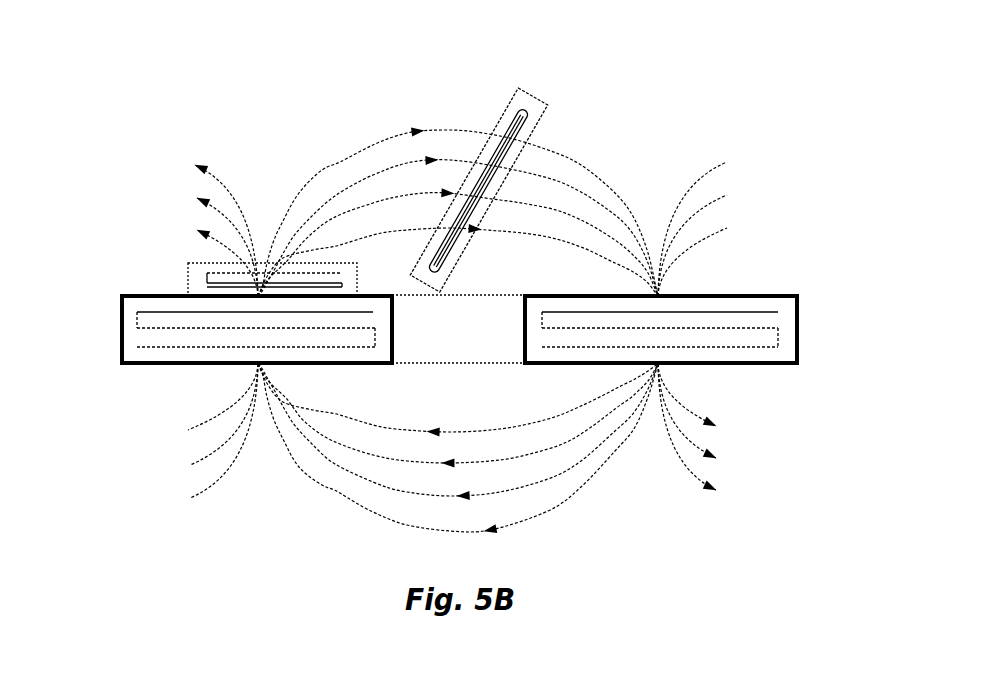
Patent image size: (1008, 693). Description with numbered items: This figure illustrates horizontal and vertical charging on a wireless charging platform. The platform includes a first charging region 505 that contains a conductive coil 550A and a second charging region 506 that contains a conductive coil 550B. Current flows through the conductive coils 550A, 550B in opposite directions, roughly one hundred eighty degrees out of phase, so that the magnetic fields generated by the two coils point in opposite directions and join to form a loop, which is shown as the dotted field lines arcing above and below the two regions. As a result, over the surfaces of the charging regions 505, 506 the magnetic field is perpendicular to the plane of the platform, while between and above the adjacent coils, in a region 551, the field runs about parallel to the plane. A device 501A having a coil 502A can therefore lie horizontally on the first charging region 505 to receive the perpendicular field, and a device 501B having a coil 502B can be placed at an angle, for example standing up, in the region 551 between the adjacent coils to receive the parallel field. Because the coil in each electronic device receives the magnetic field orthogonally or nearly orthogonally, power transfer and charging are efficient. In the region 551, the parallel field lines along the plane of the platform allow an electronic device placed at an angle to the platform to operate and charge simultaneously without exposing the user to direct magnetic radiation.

The device 501A is at (188, 287).
The coil 502A is at (207, 268).
The conductive coil 550A is at (138, 323).
The first charging region 505 is at (183, 367).
The region 551 is at (458, 329).
The device 501B is at (499, 121).
The coil 502B is at (528, 128).
The conductive coil 550B is at (780, 335).
The second charging region 506 is at (757, 368).